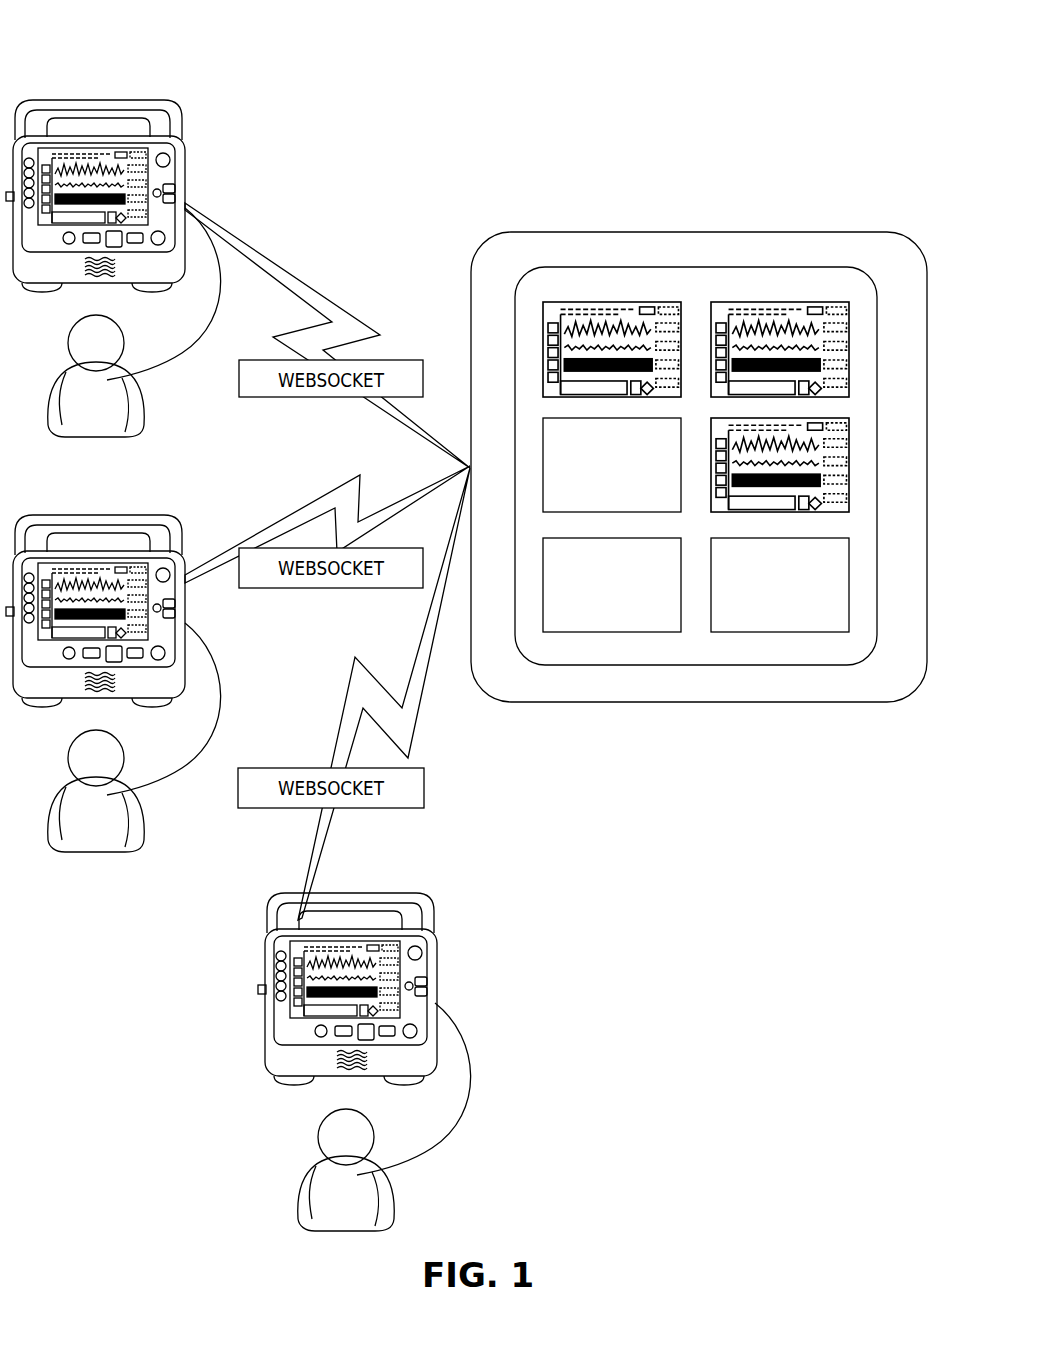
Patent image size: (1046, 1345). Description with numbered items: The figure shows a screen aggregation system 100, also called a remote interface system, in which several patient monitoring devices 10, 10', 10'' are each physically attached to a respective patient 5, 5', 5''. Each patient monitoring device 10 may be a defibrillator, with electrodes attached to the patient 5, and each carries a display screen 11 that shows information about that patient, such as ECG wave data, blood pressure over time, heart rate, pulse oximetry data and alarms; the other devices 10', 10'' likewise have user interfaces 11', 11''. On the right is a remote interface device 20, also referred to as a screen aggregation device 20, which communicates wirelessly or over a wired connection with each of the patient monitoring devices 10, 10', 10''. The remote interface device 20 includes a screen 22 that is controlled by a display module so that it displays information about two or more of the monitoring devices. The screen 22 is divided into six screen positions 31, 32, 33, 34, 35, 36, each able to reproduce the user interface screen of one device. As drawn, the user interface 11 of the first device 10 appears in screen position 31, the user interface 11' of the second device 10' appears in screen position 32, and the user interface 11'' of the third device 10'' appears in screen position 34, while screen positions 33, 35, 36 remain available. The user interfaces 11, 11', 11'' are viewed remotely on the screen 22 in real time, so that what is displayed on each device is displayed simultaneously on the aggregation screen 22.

The screen aggregation system 100 is at (205, 70).
The patient monitoring device 10 is at (120, 196).
The patient monitoring device 10' is at (125, 609).
The patient monitoring device 10'' is at (365, 989).
The display screen 11 is at (131, 186).
The user interface 11' is at (134, 601).
The user interface 11'' is at (314, 990).
The patient 5 is at (116, 376).
The patient 5' is at (120, 791).
The patient 5'' is at (371, 1170).
The remote interface device 20 is at (587, 232).
The screen 22 is at (708, 267).
The screen position 31 is at (630, 300).
The screen position 32 is at (810, 300).
The screen position 33 is at (620, 512).
The screen position 34 is at (762, 512).
The screen position 35 is at (645, 632).
The screen position 36 is at (745, 632).